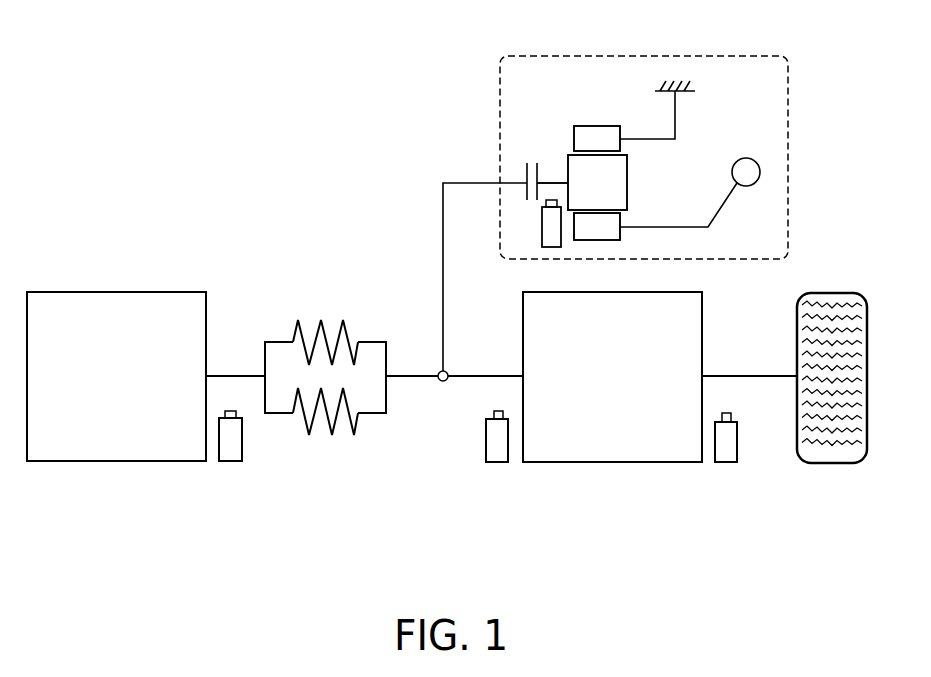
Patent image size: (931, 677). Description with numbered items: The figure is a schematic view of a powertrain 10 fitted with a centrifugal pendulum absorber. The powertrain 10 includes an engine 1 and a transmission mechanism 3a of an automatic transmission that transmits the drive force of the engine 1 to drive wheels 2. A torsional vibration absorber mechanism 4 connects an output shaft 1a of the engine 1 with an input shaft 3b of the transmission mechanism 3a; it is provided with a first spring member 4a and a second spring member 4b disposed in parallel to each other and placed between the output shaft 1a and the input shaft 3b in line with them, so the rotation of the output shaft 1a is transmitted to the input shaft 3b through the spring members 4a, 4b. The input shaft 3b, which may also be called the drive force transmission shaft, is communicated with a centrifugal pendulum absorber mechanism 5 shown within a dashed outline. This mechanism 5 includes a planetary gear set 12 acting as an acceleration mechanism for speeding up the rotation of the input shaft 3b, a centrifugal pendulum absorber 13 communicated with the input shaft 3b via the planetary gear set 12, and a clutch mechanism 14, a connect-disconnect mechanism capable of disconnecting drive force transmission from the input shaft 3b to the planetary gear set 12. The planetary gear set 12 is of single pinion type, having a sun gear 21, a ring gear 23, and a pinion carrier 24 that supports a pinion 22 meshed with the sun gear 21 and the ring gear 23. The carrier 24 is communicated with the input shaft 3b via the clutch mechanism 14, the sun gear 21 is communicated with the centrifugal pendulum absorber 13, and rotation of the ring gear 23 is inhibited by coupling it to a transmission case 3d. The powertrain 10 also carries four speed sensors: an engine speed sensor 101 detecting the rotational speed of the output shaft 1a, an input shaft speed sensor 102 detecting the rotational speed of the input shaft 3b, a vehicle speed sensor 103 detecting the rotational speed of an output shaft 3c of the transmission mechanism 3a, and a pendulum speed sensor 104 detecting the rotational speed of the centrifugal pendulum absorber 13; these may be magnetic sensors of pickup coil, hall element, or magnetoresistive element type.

The engine 1 is at (165, 292).
The output shaft 1a is at (230, 376).
The drive wheels 2 is at (848, 293).
The transmission mechanism 3a is at (702, 296).
The input shaft 3b is at (483, 376).
The output shaft 3c is at (745, 376).
The transmission case 3d is at (683, 80).
The torsional vibration absorber mechanism 4 is at (374, 338).
The first spring member 4a is at (297, 325).
The second spring member 4b is at (310, 437).
The centrifugal pendulum absorber mechanism 5 is at (759, 56).
The powertrain 10 is at (220, 148).
The planetary gear set 12 is at (596, 120).
The centrifugal pendulum absorber 13 is at (728, 200).
The clutch mechanism 14 is at (529, 163).
The sun gear 21 is at (621, 238).
The pinion 22 is at (628, 180).
The ring gear 23 is at (612, 126).
The pinion carrier 24 is at (550, 182).
The engine speed sensor 101 is at (231, 463).
The transmission mechanism input shaft speed sensor 102 is at (497, 464).
The vehicle speed sensor 103 is at (726, 464).
The pendulum speed sensor 104 is at (562, 248).